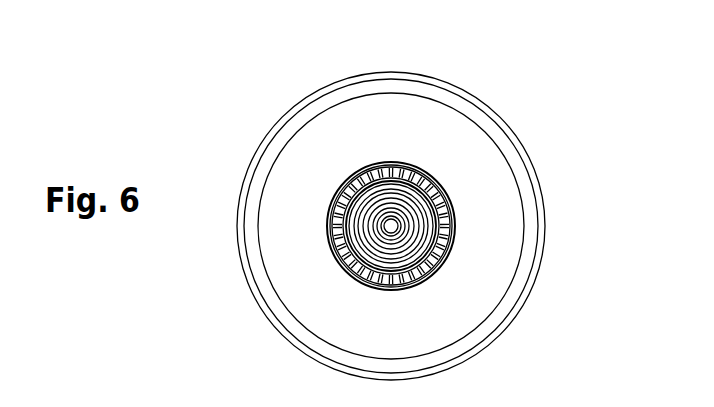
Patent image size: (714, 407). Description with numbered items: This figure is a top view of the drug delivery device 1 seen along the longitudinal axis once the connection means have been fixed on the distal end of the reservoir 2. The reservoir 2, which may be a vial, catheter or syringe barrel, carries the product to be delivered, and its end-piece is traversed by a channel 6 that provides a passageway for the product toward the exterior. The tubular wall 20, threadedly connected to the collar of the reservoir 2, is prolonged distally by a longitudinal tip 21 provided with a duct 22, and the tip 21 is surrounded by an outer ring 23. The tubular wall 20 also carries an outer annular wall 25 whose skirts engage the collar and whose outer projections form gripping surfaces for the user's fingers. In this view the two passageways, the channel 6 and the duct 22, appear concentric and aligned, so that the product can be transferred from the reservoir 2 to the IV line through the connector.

The drug delivery device 1 is at (556, 119).
The reservoir 2 is at (544, 198).
The channel 6 is at (392, 227).
The tubular wall 20 is at (390, 148).
The longitudinal tip 21 is at (385, 229).
The duct 22 is at (391, 226).
The outer ring 23 is at (350, 178).
The outer annular wall 25 is at (437, 178).